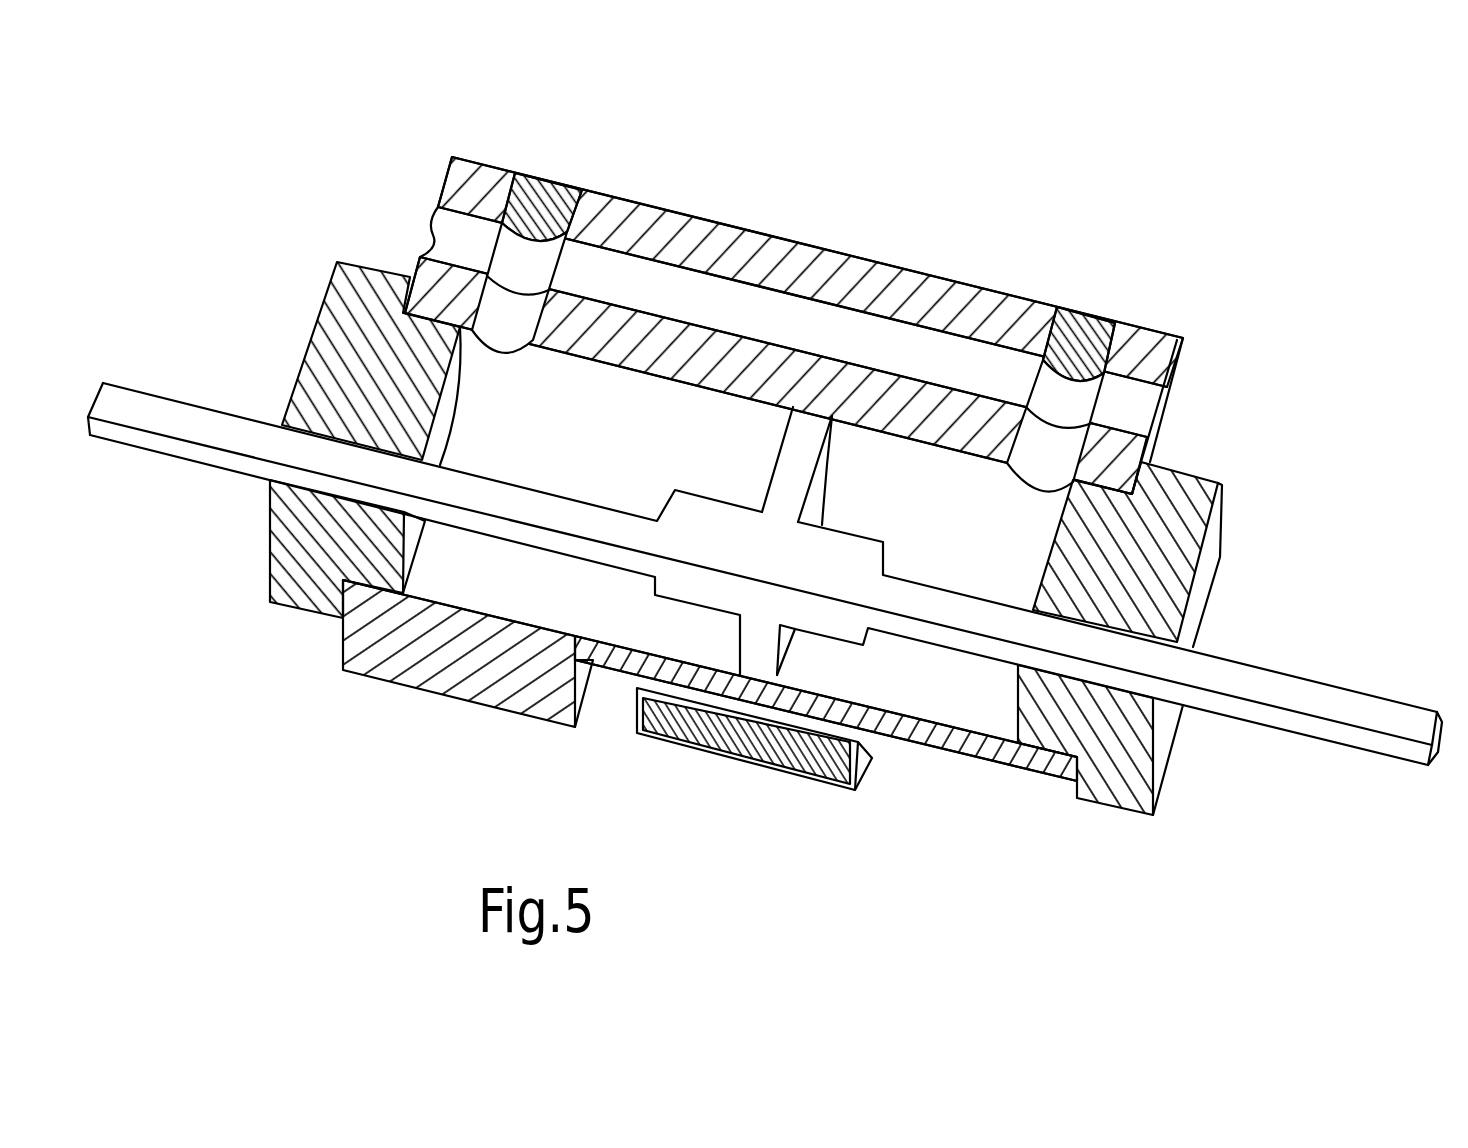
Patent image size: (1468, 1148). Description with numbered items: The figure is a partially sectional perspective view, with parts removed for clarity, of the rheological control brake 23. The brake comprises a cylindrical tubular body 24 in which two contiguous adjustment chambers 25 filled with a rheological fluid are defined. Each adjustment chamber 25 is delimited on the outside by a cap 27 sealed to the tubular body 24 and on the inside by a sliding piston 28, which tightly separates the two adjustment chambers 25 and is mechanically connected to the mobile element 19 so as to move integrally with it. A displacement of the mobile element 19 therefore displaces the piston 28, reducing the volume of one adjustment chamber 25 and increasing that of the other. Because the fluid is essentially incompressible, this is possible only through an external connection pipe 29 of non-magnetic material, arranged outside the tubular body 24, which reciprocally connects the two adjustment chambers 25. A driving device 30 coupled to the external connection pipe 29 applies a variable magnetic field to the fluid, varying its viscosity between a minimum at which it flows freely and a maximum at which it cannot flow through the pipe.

The mobile element 19 is at (1300, 725).
The rheological control brake 23 is at (705, 472).
The tubular body 24 is at (978, 752).
The adjustment chamber 25 is at (482, 585).
The cap 27 is at (292, 598).
The sliding piston 28 is at (790, 453).
The external connection pipe 29 is at (863, 338).
The driving device 30 is at (732, 790).